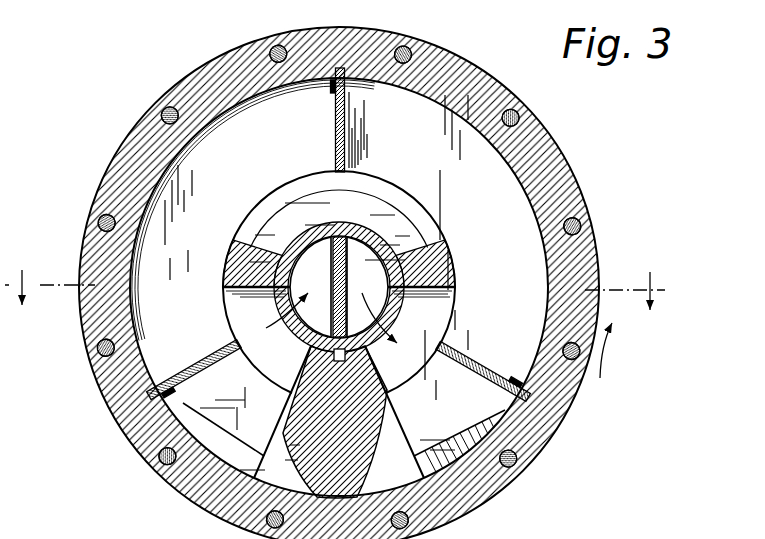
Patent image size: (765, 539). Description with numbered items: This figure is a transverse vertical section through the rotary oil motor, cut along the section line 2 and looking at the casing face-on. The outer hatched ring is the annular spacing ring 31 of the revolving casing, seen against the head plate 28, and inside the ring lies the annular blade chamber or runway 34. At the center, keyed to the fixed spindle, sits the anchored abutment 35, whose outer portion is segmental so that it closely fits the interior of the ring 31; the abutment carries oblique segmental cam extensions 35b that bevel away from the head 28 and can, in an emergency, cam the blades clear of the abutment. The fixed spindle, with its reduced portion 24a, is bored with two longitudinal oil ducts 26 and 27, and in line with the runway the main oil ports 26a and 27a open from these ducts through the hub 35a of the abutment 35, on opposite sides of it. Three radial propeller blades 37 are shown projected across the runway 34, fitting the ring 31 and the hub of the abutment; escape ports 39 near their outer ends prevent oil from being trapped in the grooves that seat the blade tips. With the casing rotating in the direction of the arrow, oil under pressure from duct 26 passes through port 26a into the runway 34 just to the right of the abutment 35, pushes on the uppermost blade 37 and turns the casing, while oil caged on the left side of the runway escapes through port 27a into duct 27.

The section line 2- 2 is at (342, 324).
The reduced portion of spindle 24a is at (332, 355).
The oil duct 26 is at (367, 287).
The main oil port 26a is at (420, 309).
The oil duct 27 is at (310, 287).
The main oil port 27a is at (262, 310).
The head plate 28 is at (508, 187).
The annular spacing ring 31 is at (550, 136).
The annular blade chamber or runway 34 is at (505, 245).
The anchored abutment 35 is at (303, 398).
The hub of abutment 35a is at (300, 208).
The oblique segmental cam extensions 35b is at (590, 433).
The propeller blade 37 is at (336, 130).
The escape port 39 is at (332, 88).